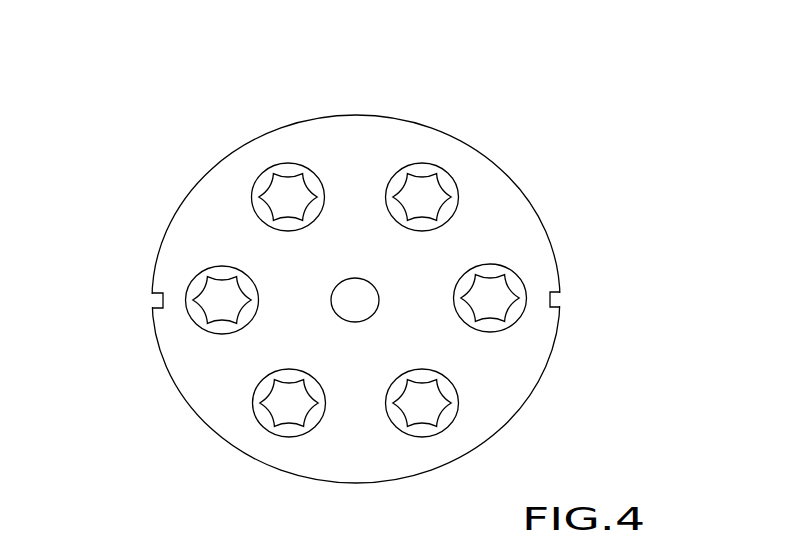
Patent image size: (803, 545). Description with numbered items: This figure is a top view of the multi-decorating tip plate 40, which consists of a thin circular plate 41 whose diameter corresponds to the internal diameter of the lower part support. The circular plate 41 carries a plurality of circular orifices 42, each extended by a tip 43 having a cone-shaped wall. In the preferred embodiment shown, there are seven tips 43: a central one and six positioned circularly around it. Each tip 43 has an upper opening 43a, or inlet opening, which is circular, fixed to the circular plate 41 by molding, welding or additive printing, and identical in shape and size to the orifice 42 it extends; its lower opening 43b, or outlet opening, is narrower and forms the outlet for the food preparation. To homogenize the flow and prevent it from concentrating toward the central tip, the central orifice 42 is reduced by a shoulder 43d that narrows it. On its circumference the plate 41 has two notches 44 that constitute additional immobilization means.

The multi-decorating tip plate 40 is at (507, 158).
The circular plate 41 is at (218, 162).
The circular orifices 42 is at (355, 290).
The tip 43 is at (207, 320).
The upper opening 43a is at (333, 308).
The lower opening 43b is at (275, 402).
The shoulder 43d is at (357, 322).
The notches 44 is at (152, 300).